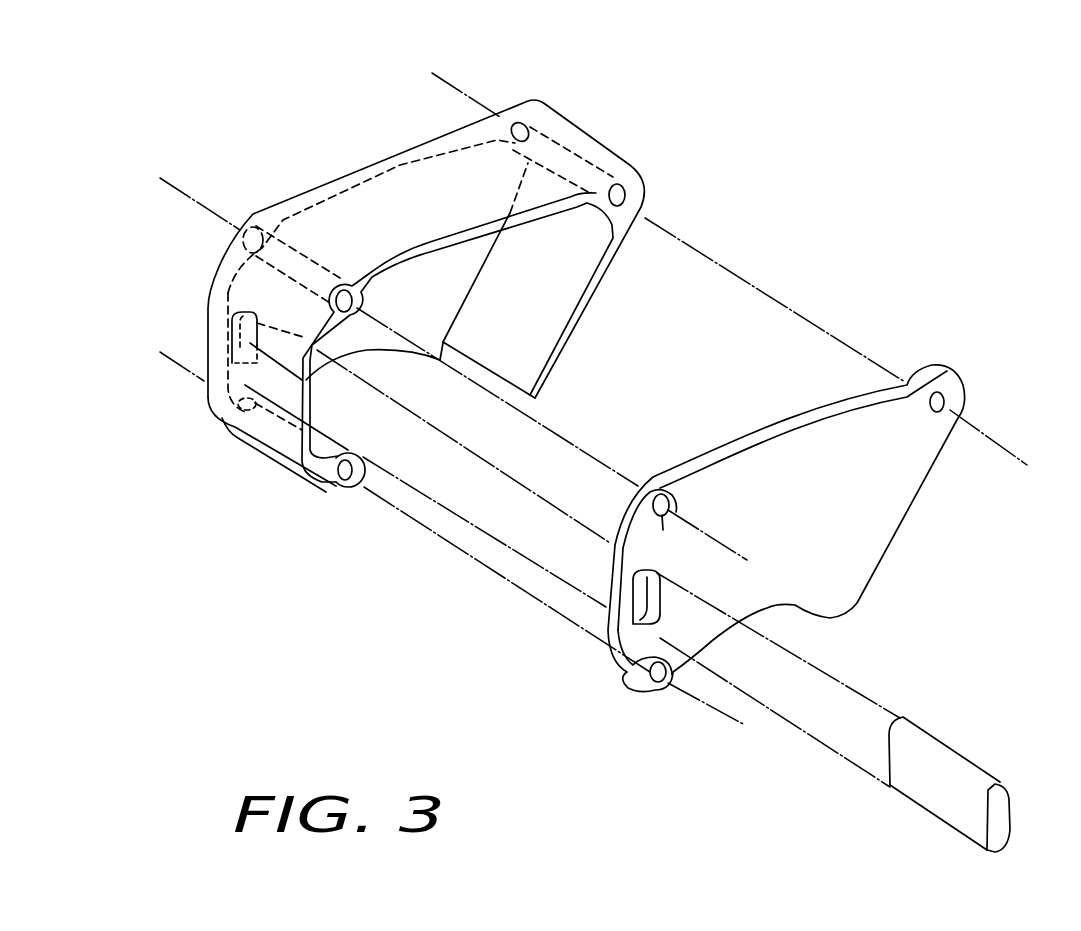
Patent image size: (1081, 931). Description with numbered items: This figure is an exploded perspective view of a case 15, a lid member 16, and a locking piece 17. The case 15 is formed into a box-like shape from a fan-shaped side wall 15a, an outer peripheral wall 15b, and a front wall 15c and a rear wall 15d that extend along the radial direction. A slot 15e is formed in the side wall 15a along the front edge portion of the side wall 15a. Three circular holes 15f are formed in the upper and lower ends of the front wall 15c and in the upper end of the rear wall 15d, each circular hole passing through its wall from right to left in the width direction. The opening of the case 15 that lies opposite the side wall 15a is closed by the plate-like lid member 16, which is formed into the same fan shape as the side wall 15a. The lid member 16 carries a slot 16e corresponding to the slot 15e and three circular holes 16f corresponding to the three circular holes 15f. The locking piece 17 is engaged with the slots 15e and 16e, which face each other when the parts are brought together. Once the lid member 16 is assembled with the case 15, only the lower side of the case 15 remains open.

The case 15 is at (346, 146).
The side wall 15a is at (440, 293).
The outer peripheral wall 15b is at (413, 193).
The front wall 15c is at (275, 372).
The rear wall 15d is at (597, 307).
The slot 15e is at (415, 455).
The circular holes 15f is at (628, 192).
The lid member 16 is at (847, 533).
The slot 16e is at (660, 610).
The circular holes 16f is at (946, 400).
The locking piece 17 is at (937, 790).